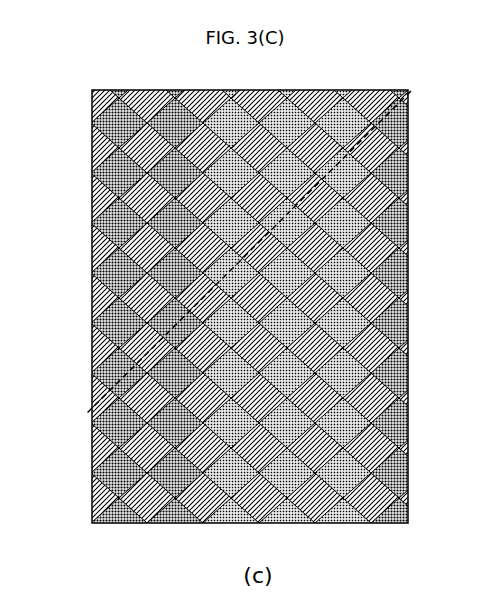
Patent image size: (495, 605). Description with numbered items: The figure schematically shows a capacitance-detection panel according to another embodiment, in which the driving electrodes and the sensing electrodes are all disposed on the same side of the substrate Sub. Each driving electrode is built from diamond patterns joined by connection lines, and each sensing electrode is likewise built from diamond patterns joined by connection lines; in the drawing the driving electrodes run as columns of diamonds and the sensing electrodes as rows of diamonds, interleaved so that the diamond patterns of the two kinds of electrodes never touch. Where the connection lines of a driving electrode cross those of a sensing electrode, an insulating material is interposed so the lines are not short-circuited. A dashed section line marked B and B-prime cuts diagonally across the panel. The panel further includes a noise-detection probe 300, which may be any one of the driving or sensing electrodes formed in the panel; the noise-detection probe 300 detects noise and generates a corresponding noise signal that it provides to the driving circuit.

The noise-detection probe 300 is at (405, 512).
The substrate Sub is at (214, 509).
The section line B-B' B is at (411, 91).